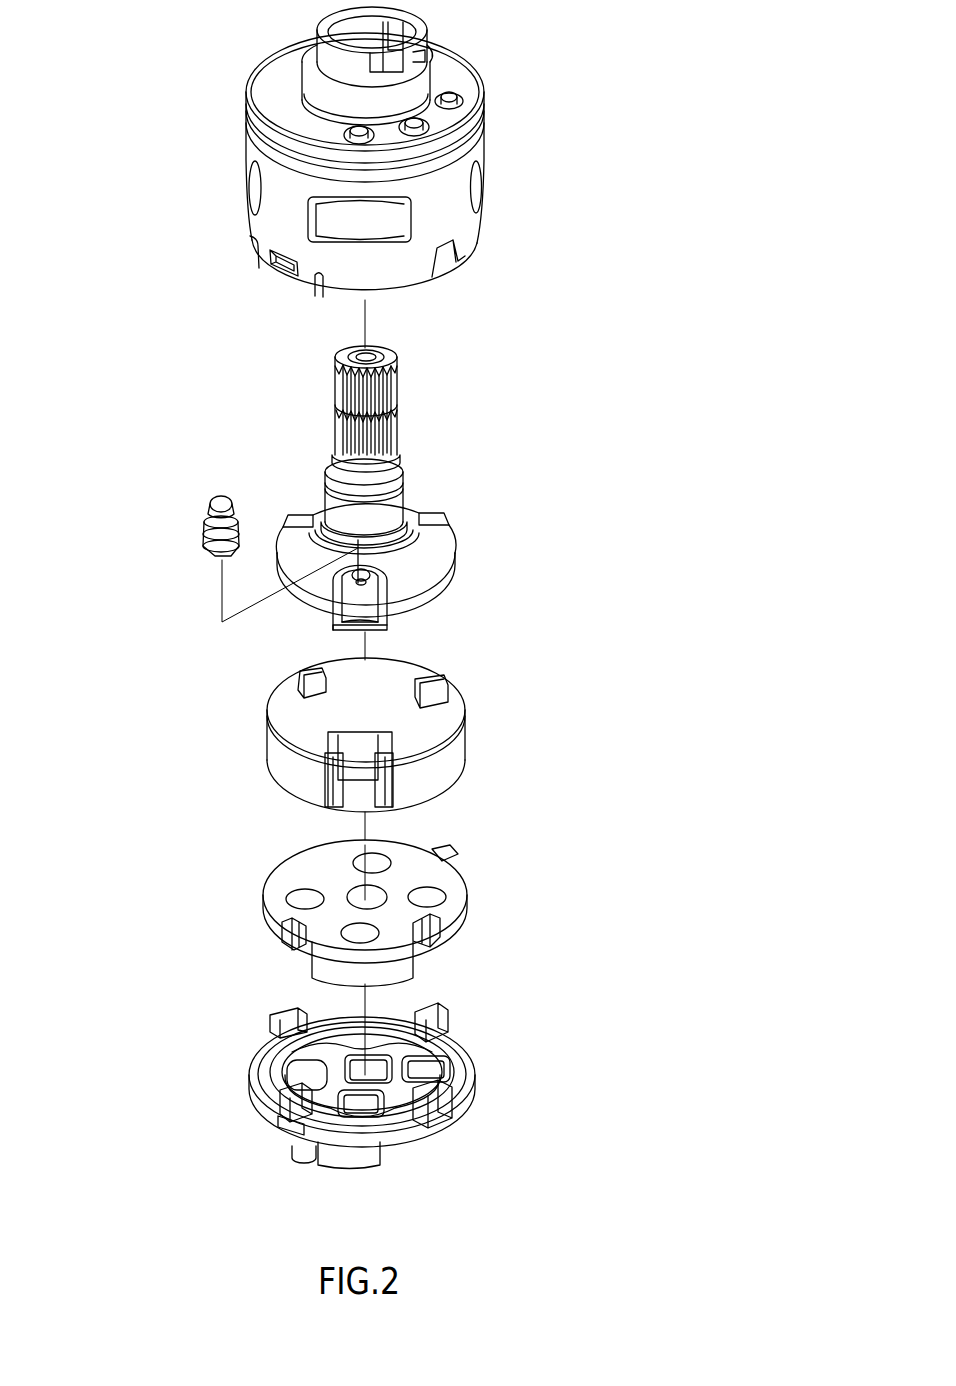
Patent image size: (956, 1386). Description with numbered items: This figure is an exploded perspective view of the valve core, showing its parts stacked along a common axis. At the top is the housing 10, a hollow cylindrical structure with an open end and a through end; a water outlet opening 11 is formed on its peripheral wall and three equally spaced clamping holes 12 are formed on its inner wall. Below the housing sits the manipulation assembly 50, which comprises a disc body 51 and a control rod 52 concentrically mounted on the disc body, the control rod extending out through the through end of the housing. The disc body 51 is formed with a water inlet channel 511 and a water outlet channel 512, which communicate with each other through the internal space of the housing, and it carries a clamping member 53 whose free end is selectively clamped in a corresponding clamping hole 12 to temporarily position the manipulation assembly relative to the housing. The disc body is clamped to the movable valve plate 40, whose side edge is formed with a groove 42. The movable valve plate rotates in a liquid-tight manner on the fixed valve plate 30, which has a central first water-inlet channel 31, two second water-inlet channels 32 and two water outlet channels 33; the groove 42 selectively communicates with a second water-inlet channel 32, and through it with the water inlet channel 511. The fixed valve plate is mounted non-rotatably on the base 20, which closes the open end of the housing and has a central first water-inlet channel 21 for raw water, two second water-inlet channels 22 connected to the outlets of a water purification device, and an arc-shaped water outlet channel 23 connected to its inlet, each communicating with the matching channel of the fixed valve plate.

The housing 10 is at (443, 157).
The water outlet opening 11 is at (378, 230).
The clamping holes 12 is at (463, 107).
The manipulation assembly 50 is at (354, 502).
The control rod 52 is at (387, 427).
The disc body 51 is at (432, 580).
The water inlet channel 511 is at (388, 605).
The water outlet channel 512 is at (317, 503).
The clamping member 53 is at (205, 510).
The movable valve plate 40 is at (436, 735).
The groove 42 is at (363, 765).
The fixed valve plate 30 is at (396, 895).
The first water-inlet channel 31 is at (370, 898).
The second water-inlet channels 32 is at (430, 897).
The water outlet channels 33 is at (382, 862).
The base 20 is at (385, 1108).
The first water-inlet channel 21 is at (353, 1070).
The second water-inlet channels 22 is at (433, 1067).
The water outlet channel 23 is at (340, 1042).